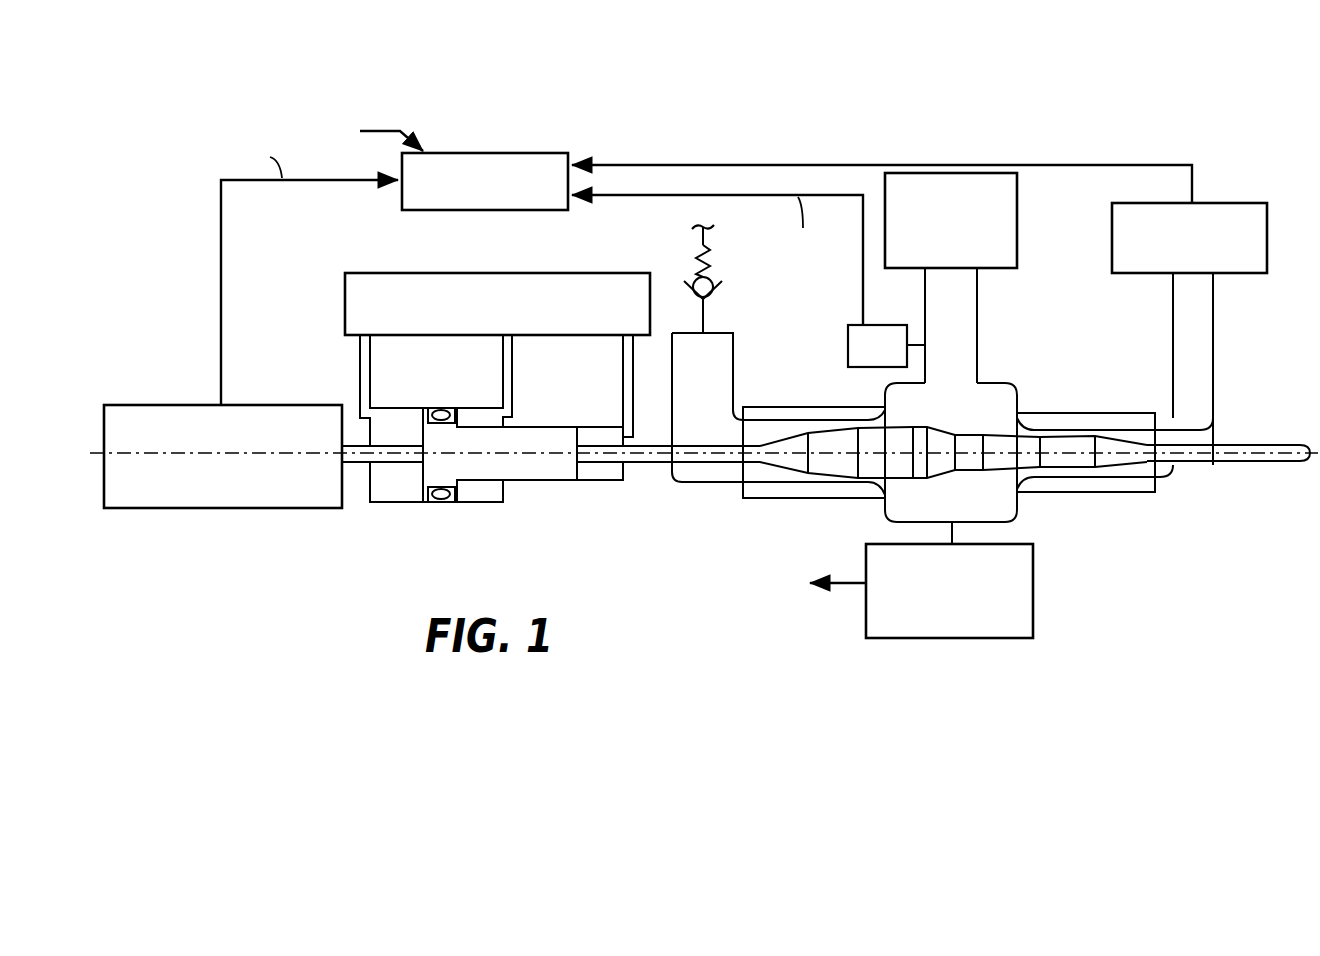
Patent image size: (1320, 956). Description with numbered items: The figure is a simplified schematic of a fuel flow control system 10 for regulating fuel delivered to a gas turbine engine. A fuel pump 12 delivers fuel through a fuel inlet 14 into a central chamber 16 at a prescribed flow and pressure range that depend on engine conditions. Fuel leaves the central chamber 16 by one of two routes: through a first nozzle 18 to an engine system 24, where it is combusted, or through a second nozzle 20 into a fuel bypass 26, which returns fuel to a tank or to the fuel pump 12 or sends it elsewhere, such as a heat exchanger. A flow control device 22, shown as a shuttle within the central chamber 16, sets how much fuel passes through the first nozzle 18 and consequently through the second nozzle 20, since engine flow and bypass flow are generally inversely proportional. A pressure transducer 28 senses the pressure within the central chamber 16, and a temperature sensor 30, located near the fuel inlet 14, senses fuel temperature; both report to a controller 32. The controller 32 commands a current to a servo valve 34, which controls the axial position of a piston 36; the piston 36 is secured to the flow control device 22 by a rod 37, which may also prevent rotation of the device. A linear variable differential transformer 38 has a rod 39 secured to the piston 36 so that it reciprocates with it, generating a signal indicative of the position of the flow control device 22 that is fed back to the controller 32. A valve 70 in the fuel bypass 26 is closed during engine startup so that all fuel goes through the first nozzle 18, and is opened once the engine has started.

The fuel flow control system 10 is at (704, 346).
The fuel pump 12 is at (963, 262).
The fuel inlet 14 is at (951, 375).
The central chamber 16 is at (903, 510).
The first nozzle 18 is at (1124, 496).
The second nozzle 20 is at (755, 503).
The flow control device 22 is at (970, 463).
The engine system 24 is at (1203, 262).
The fuel bypass 26 is at (722, 370).
The pressure transducer 28 is at (966, 630).
The temperature sensor 30 is at (892, 357).
The controller 32 is at (498, 205).
The servo valve 34 is at (513, 328).
The piston 36 is at (538, 470).
The rod 37 is at (652, 465).
The linear variable differential transformer 38 is at (229, 494).
The rod 39 is at (353, 464).
The valve 70 is at (712, 277).